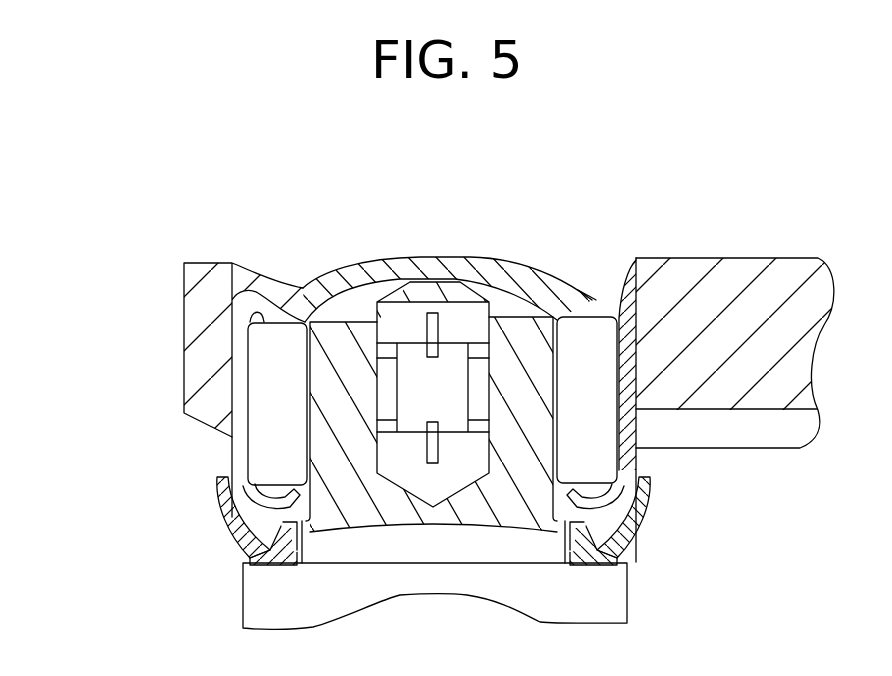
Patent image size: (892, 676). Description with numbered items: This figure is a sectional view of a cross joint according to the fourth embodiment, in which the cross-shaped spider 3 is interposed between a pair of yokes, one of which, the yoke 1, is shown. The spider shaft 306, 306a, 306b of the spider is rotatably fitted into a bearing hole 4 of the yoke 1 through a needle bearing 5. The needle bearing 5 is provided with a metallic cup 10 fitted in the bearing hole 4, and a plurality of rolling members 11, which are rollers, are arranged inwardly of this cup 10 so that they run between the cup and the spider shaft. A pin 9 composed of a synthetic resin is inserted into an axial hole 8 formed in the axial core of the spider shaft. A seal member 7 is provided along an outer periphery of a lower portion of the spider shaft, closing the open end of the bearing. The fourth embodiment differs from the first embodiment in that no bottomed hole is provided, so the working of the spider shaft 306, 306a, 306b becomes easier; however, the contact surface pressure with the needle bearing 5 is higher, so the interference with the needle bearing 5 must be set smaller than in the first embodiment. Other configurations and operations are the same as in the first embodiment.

The yoke 1 is at (753, 257).
The cross-shaped spider 3 is at (193, 563).
The bearing hole 4 is at (620, 262).
The needle bearing 5 is at (594, 290).
The seal member 7 is at (645, 514).
The axial hole 8 is at (403, 460).
The pin 9 is at (467, 458).
The metallic cup 10 is at (475, 258).
The rolling members 11 is at (600, 433).
The spider shaft 306 is at (95, 375).
The spider shaft 306a is at (312, 337).
The spider shaft 306b is at (327, 453).